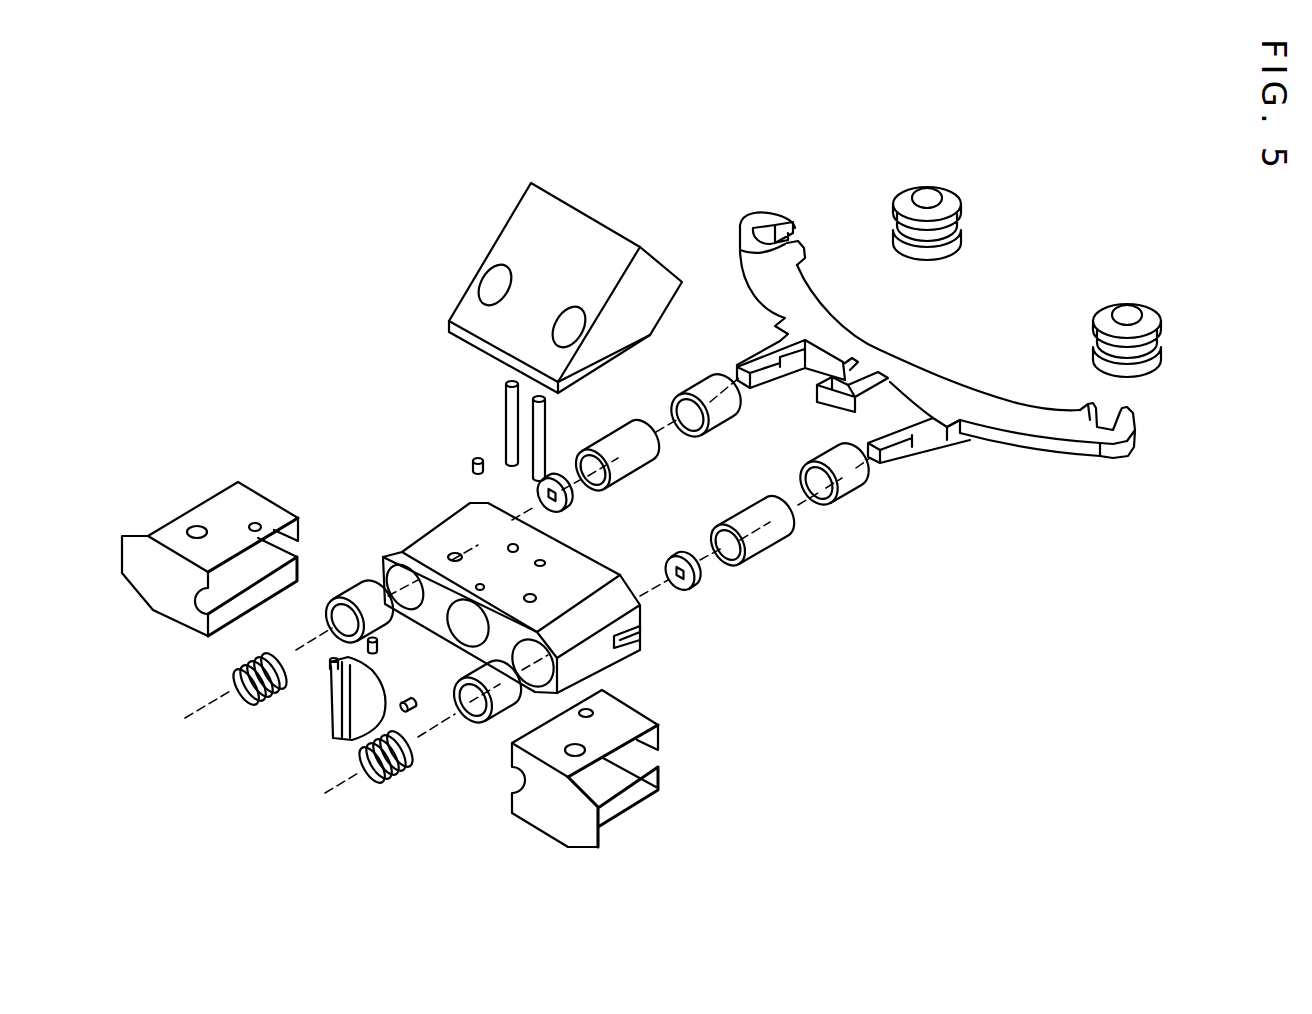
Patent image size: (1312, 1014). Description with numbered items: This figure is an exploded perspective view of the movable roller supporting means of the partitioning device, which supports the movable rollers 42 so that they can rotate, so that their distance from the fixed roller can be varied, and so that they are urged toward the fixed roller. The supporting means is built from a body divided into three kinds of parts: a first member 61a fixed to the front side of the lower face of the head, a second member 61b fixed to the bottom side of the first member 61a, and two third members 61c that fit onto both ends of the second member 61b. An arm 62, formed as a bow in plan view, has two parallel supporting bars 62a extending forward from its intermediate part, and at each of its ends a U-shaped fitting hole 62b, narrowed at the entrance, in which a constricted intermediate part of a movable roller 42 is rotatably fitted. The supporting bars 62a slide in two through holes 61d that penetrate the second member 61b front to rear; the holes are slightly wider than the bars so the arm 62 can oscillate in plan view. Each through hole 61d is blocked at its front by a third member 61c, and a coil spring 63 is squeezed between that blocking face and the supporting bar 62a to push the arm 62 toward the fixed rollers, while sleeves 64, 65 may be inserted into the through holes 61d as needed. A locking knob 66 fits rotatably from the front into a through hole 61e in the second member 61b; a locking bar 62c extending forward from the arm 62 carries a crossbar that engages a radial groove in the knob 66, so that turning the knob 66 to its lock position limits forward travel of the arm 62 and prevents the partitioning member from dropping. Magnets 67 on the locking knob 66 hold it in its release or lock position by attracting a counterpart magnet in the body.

The movable roller 42 is at (950, 210).
The first member 61a is at (527, 238).
The second member 61b is at (450, 518).
The third member 61c is at (210, 512).
The through hole 61d is at (403, 580).
The through hole 61e is at (475, 620).
The arm 62 is at (958, 338).
The supporting bar 62a is at (748, 378).
The fitting hole 62b is at (763, 225).
The locking bar 62c is at (833, 406).
The coil spring 63 is at (246, 701).
The sleeve 64 is at (695, 382).
The sleeve 65 is at (623, 437).
The locking knob 66 is at (338, 720).
The magnet 67 is at (332, 660).